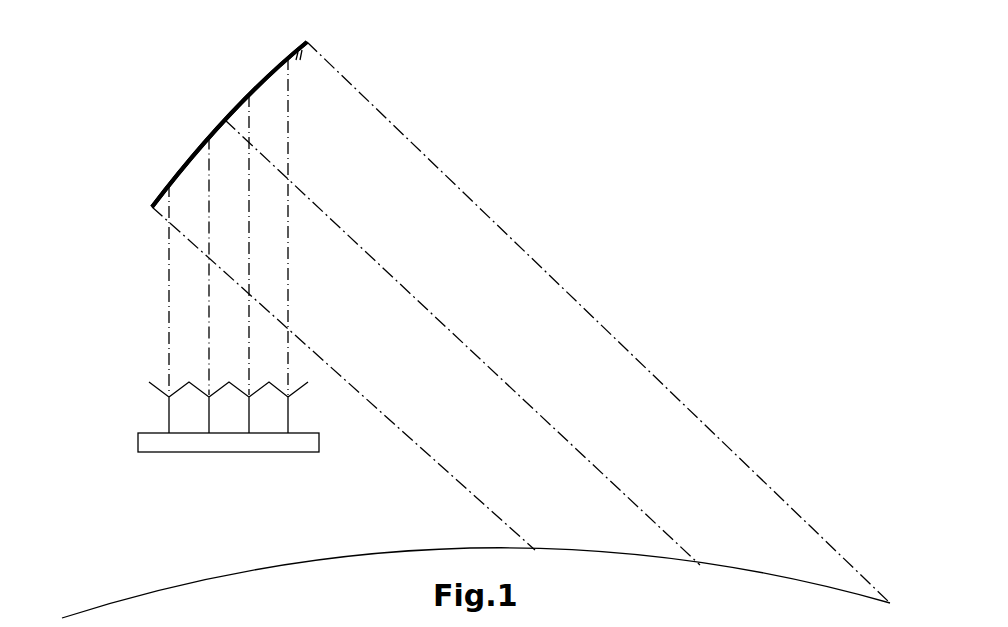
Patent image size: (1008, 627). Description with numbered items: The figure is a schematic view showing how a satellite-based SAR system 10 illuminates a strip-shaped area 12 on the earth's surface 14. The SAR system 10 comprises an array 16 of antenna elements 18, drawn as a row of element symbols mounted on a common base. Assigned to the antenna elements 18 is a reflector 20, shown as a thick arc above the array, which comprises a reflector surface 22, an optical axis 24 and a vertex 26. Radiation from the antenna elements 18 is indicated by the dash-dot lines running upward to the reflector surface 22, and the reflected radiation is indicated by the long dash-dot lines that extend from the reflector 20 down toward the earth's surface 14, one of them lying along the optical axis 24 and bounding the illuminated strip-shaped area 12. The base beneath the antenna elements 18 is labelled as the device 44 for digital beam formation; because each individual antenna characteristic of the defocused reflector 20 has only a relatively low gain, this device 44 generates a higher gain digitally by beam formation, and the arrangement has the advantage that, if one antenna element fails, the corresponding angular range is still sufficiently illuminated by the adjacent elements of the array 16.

The SAR system 10 is at (320, 317).
The strip-shaped area 12 is at (666, 550).
The earth's surface 14 is at (133, 598).
The array 16 is at (172, 291).
The antenna elements 18 is at (190, 383).
The reflector 20 is at (257, 85).
The reflector surface 22 is at (297, 53).
The optical axis 24 is at (352, 238).
The vertex 26 is at (223, 119).
The device for digital beam formation 44 is at (185, 440).